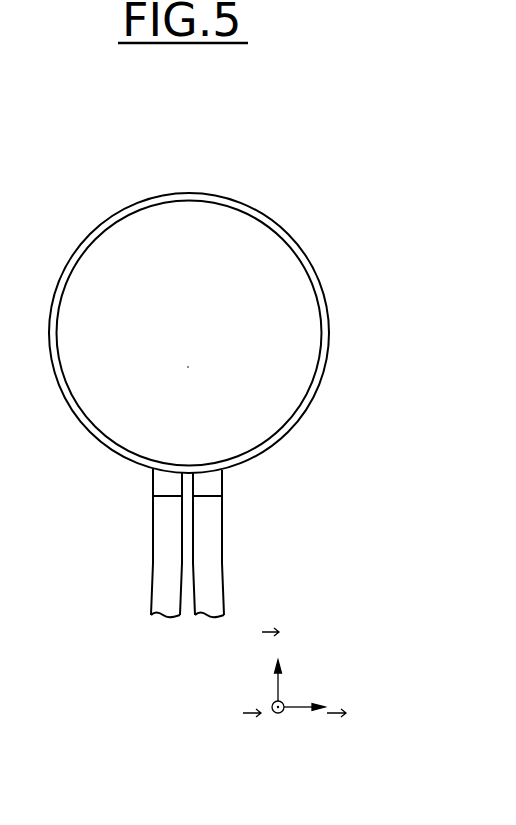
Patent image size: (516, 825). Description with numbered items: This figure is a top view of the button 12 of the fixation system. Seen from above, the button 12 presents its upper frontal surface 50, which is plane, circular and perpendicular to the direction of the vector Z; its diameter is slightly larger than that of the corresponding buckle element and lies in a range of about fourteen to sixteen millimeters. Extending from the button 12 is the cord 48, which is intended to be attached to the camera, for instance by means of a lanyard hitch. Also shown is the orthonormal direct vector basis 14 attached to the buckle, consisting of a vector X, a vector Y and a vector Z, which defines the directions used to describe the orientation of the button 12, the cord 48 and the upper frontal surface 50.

The button 12 is at (191, 366).
The orthonormal direct vector basis 14 is at (322, 648).
The cord 48 is at (223, 555).
The upper frontal surface 50 is at (203, 347).